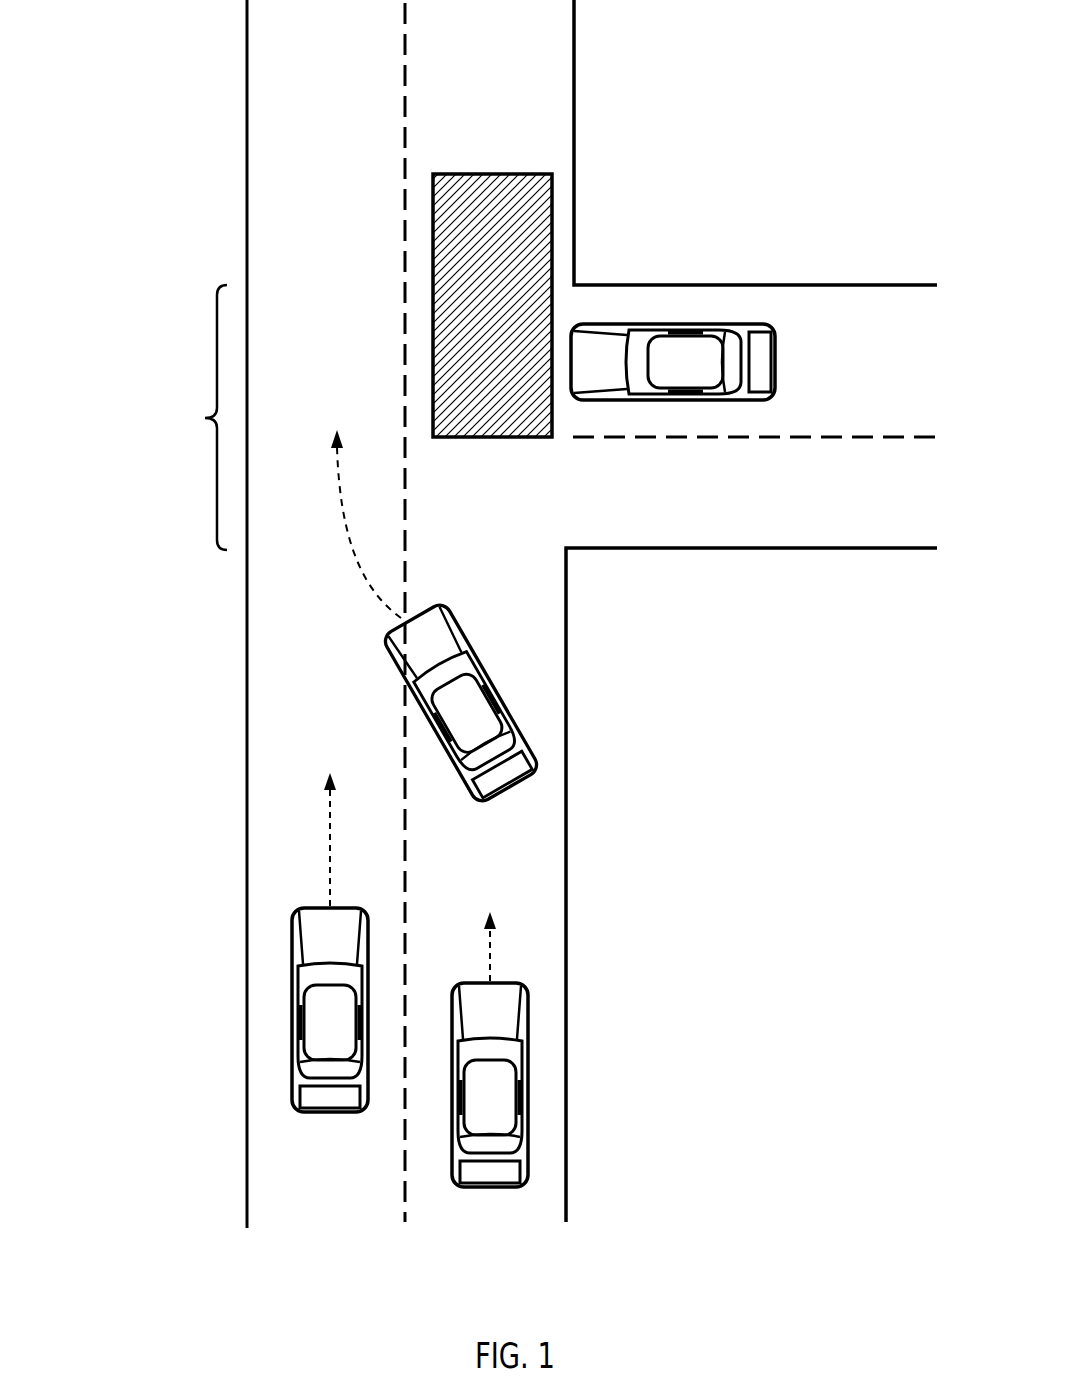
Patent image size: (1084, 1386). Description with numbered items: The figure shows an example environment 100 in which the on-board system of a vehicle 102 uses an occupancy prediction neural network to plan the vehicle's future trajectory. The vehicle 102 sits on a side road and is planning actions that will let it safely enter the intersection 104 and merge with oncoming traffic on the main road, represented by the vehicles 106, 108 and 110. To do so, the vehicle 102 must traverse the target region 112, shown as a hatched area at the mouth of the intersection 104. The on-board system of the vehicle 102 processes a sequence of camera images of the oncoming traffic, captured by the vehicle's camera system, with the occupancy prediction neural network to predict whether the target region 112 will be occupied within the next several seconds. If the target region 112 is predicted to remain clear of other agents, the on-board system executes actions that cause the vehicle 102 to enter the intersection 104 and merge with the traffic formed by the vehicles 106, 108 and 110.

The environment 100 is at (693, 1300).
The vehicle 102 is at (777, 360).
The intersection 104 is at (135, 431).
The vehicle 106 is at (459, 622).
The vehicle 108 is at (304, 908).
The vehicle 110 is at (504, 984).
The target region 112 is at (563, 210).